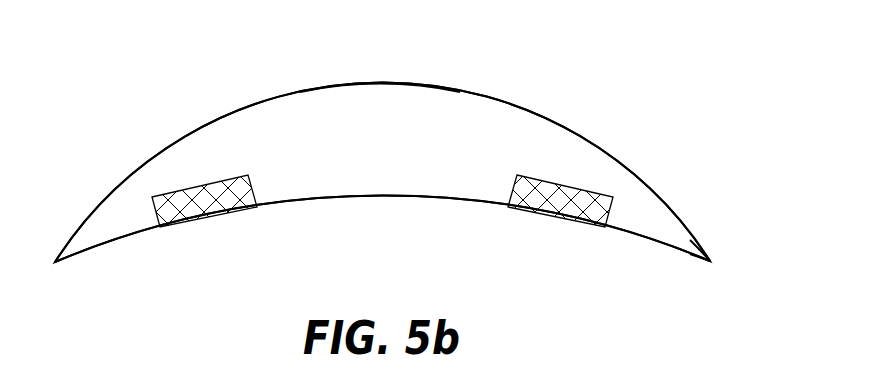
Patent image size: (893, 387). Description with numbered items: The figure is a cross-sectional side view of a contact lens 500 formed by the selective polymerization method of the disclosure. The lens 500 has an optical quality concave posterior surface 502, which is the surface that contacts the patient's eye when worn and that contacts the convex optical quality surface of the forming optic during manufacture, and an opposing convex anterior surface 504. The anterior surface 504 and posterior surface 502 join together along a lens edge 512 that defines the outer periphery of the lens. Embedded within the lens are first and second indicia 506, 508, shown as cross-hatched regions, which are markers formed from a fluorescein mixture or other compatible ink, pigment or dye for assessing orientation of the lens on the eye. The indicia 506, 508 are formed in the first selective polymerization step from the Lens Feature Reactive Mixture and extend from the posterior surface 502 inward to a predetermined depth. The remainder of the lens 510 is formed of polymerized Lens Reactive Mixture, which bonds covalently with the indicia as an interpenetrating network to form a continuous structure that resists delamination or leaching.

The lens 500 is at (220, 110).
The posterior surface 502 is at (353, 200).
The anterior surface 504 is at (534, 116).
The first indicium 506 is at (190, 207).
The second indicium 508 is at (578, 208).
The remainder of the lens 510 is at (357, 113).
The lens edge 512 is at (717, 252).